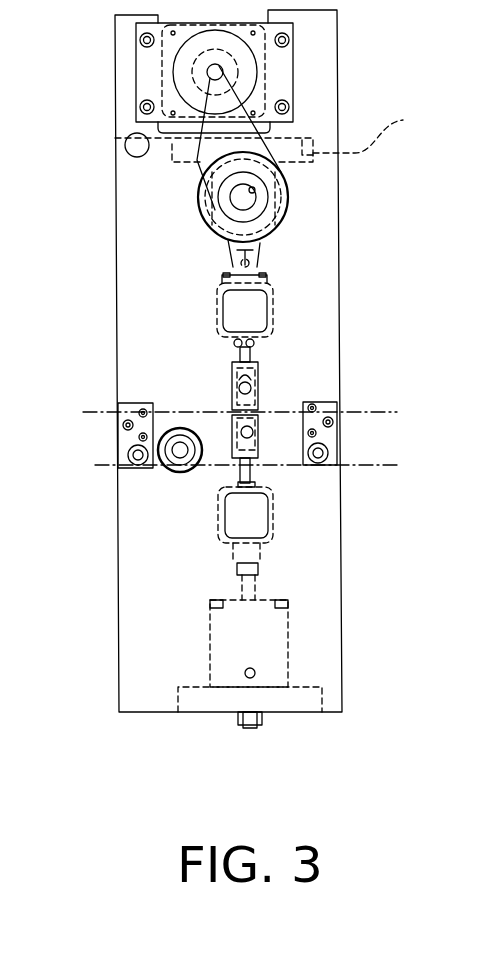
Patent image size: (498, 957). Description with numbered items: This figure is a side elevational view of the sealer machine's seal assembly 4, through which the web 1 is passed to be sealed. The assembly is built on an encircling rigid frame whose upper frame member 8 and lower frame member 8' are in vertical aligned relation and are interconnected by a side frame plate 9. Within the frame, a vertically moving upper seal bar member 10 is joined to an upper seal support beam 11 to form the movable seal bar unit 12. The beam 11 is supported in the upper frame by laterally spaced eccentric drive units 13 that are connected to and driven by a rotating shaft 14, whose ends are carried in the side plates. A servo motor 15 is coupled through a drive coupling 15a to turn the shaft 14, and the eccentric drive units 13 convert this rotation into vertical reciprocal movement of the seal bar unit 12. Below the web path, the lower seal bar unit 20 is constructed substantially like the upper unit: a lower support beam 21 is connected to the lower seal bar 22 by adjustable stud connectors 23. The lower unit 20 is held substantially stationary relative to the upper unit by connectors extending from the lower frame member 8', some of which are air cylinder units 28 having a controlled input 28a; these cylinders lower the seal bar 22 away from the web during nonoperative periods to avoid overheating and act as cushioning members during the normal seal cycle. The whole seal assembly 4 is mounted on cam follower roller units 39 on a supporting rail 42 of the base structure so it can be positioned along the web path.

The web 1 is at (358, 410).
The seal assembly 4 is at (112, 262).
The upper frame member 8 is at (365, 129).
The lower frame member 8' is at (308, 685).
The side frame plate 9 is at (323, 373).
The upper seal bar member 10 is at (260, 377).
The upper seal support beam 11 is at (273, 312).
The movable seal bar unit 12 is at (236, 343).
The eccentric drive unit 13 is at (263, 243).
The rotating shaft 14 is at (243, 198).
The servo motor 15 is at (172, 75).
The drive coupling 15a is at (172, 163).
The lower seal bar unit 20 is at (262, 440).
The lower seal support beam 21 is at (273, 523).
The lower seal bar 22 is at (238, 478).
The adjustable stud connector 23 is at (224, 492).
The air cylinder unit 28 is at (227, 628).
The controlled input 28a is at (255, 668).
The cam follower roller unit 39 is at (367, 463).
The supporting rail 42 is at (232, 442).